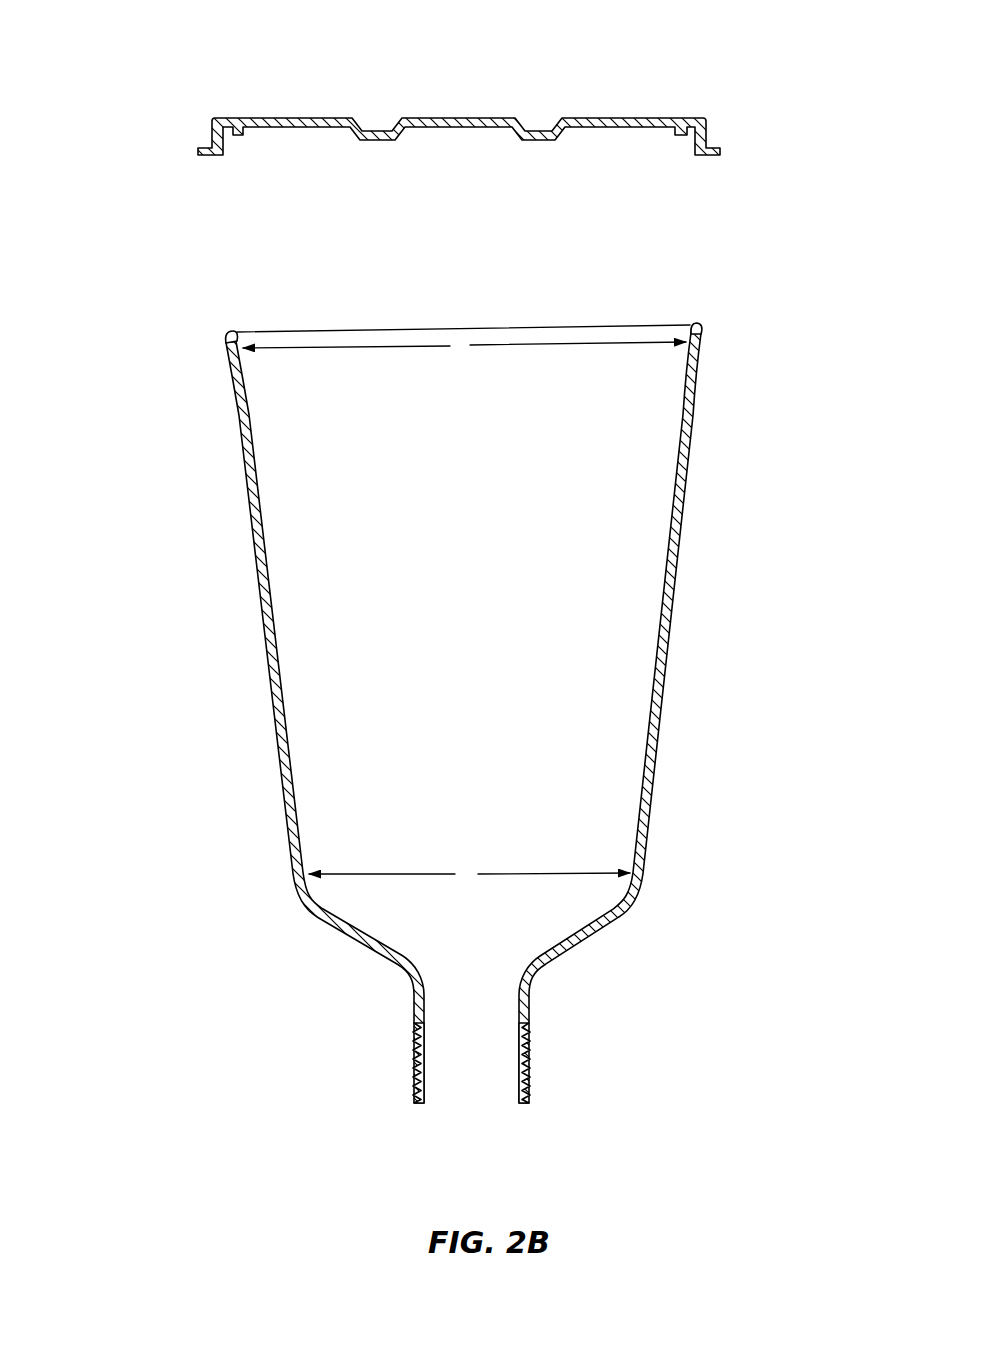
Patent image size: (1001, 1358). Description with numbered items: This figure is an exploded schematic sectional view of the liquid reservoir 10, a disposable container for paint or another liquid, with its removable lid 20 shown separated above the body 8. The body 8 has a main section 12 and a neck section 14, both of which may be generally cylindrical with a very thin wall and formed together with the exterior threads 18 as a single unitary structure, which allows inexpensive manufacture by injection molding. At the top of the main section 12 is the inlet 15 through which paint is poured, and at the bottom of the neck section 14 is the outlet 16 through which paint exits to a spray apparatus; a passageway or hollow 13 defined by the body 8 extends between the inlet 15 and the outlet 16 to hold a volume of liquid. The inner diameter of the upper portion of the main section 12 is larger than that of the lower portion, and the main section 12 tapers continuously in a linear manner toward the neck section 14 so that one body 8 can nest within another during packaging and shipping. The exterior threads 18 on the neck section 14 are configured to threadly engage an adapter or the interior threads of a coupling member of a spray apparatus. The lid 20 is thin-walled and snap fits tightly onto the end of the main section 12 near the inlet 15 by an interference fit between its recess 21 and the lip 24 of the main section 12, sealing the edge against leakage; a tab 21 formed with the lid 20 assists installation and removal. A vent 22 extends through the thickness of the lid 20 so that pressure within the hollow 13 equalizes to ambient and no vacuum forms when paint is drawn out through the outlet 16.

The body 8 is at (190, 507).
The liquid reservoir 10 is at (812, 110).
The main section 12 is at (680, 455).
The passageway or hollow 13 is at (533, 608).
The neck section 14 is at (526, 1090).
The inlet 15 is at (523, 313).
The outlet 16 is at (474, 1108).
The exterior threads 18 is at (412, 1055).
The removable lid 20 is at (322, 119).
The recess 21 is at (232, 142).
The vent 22 is at (465, 130).
The lip 24 is at (226, 338).